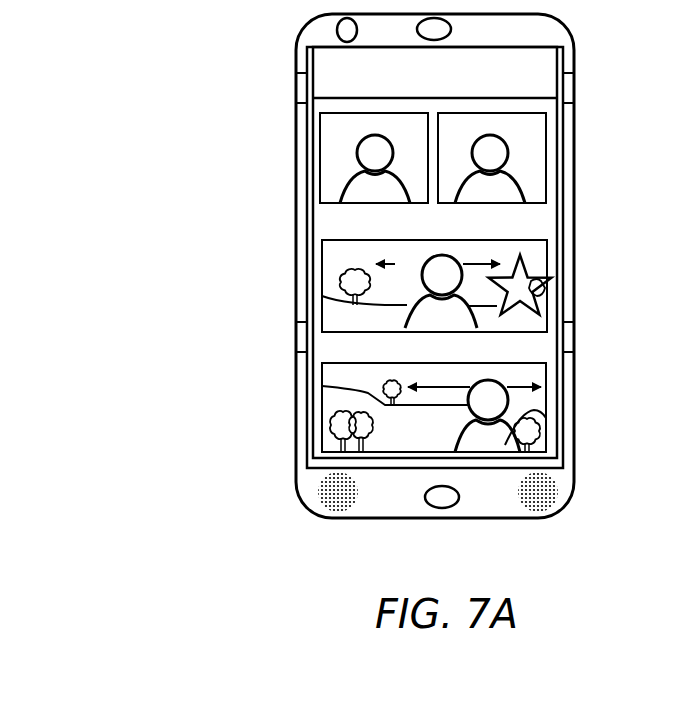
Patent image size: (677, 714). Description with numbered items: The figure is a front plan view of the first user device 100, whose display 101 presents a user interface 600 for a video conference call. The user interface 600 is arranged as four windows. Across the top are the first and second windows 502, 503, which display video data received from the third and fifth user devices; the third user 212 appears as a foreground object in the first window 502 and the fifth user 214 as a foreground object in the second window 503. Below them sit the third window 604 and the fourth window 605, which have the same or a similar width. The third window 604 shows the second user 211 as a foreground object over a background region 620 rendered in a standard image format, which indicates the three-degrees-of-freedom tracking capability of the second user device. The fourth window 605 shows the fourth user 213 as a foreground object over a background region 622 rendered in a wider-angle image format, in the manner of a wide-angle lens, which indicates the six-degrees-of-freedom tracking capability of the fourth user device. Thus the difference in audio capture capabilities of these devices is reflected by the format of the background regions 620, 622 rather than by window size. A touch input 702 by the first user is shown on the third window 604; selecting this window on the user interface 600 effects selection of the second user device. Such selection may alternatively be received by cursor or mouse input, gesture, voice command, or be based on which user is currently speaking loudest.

The first user device 100 is at (296, 181).
The display 101 is at (547, 76).
The user interface 600 is at (352, 97).
The first window 502 is at (324, 146).
The second window 503 is at (544, 158).
The third window 604 is at (431, 284).
The fourth window 605 is at (384, 399).
The touch input 702 is at (538, 283).
The second user 211 is at (457, 323).
The third user 212 is at (392, 199).
The fourth user 213 is at (505, 447).
The fifth user 214 is at (504, 199).
The background region 620 is at (363, 265).
The background region 622 is at (367, 386).